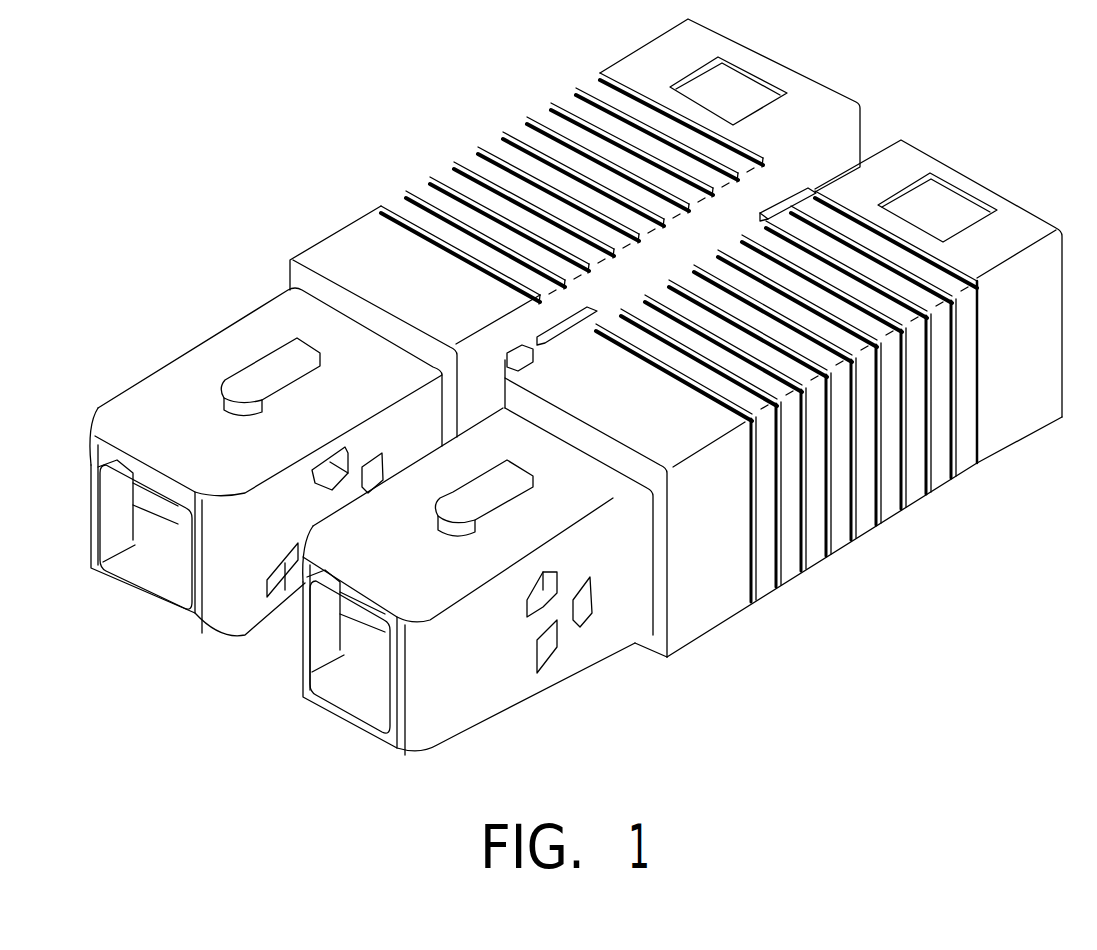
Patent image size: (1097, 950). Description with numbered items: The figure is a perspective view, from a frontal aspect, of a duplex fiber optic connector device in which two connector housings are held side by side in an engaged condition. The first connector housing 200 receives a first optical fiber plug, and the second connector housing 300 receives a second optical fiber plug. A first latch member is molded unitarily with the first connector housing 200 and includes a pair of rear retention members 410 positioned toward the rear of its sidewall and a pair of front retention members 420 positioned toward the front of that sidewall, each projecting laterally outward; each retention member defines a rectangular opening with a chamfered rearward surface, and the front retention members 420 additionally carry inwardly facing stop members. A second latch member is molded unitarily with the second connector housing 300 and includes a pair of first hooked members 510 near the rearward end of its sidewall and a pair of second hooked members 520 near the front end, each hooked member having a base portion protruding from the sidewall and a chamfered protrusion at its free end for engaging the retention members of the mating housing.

The first connector housing 200 is at (385, 273).
The second connector housing 300 is at (698, 590).
The rear retention member 410 is at (812, 183).
The front retention member 420 is at (410, 186).
The first hooked member 510 is at (778, 218).
The second hooked member 520 is at (573, 327).